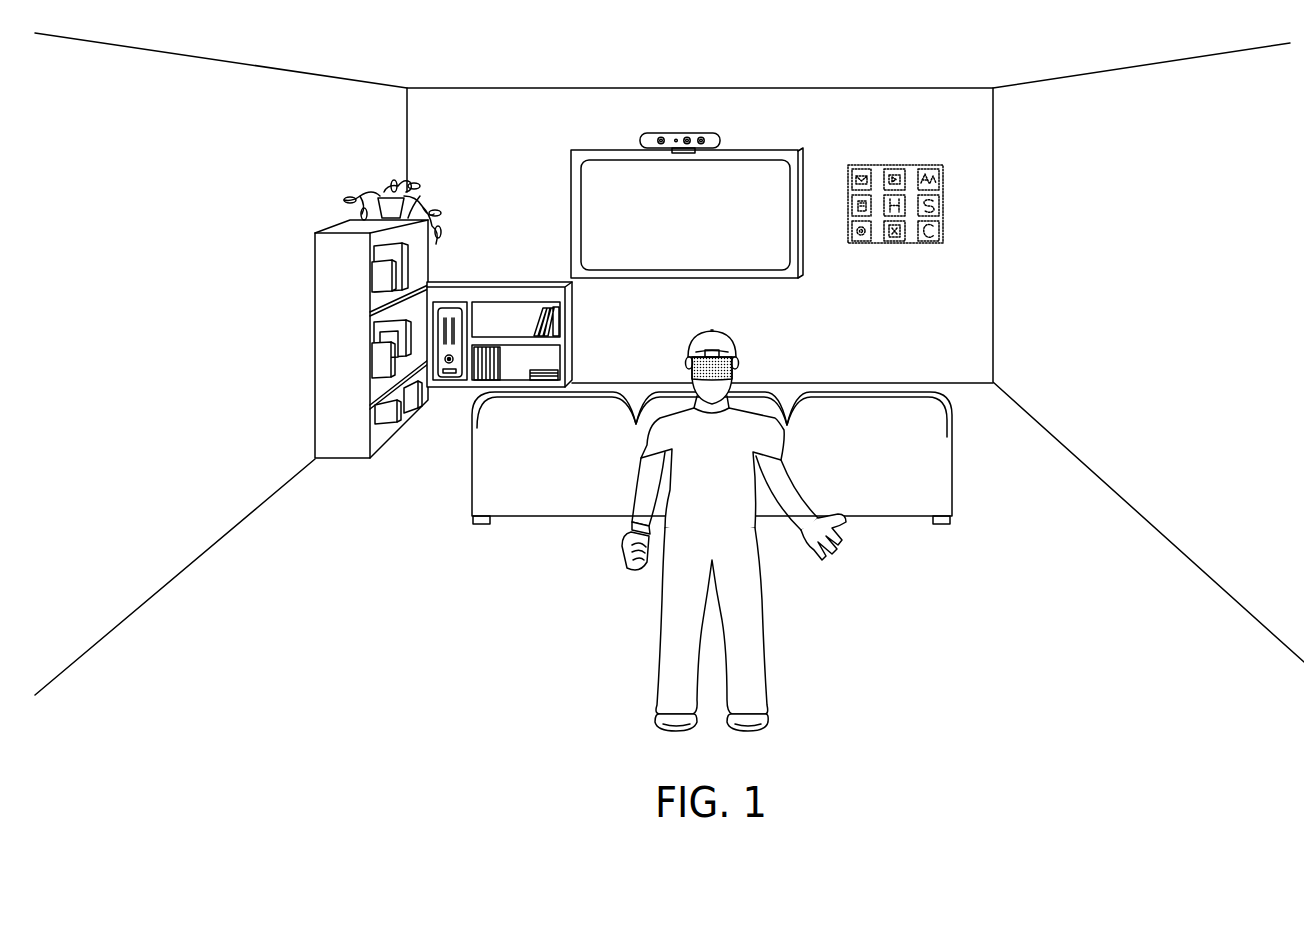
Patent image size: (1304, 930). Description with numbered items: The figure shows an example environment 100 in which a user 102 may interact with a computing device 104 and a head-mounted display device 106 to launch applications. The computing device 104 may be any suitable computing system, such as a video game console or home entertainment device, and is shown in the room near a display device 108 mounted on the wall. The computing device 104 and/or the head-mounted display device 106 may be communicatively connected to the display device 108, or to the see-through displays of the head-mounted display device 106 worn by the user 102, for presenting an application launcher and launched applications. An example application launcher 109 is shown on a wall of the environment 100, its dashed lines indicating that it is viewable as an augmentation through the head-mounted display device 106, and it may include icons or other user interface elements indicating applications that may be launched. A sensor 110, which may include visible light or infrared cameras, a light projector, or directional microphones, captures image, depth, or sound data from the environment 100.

The environment 100 is at (810, 100).
The user 102 is at (734, 530).
The computing device 104 is at (439, 380).
The head-mounted display device 106 is at (738, 358).
The display device 108 is at (799, 165).
The application launcher 109 is at (943, 188).
The sensor 110 is at (700, 133).